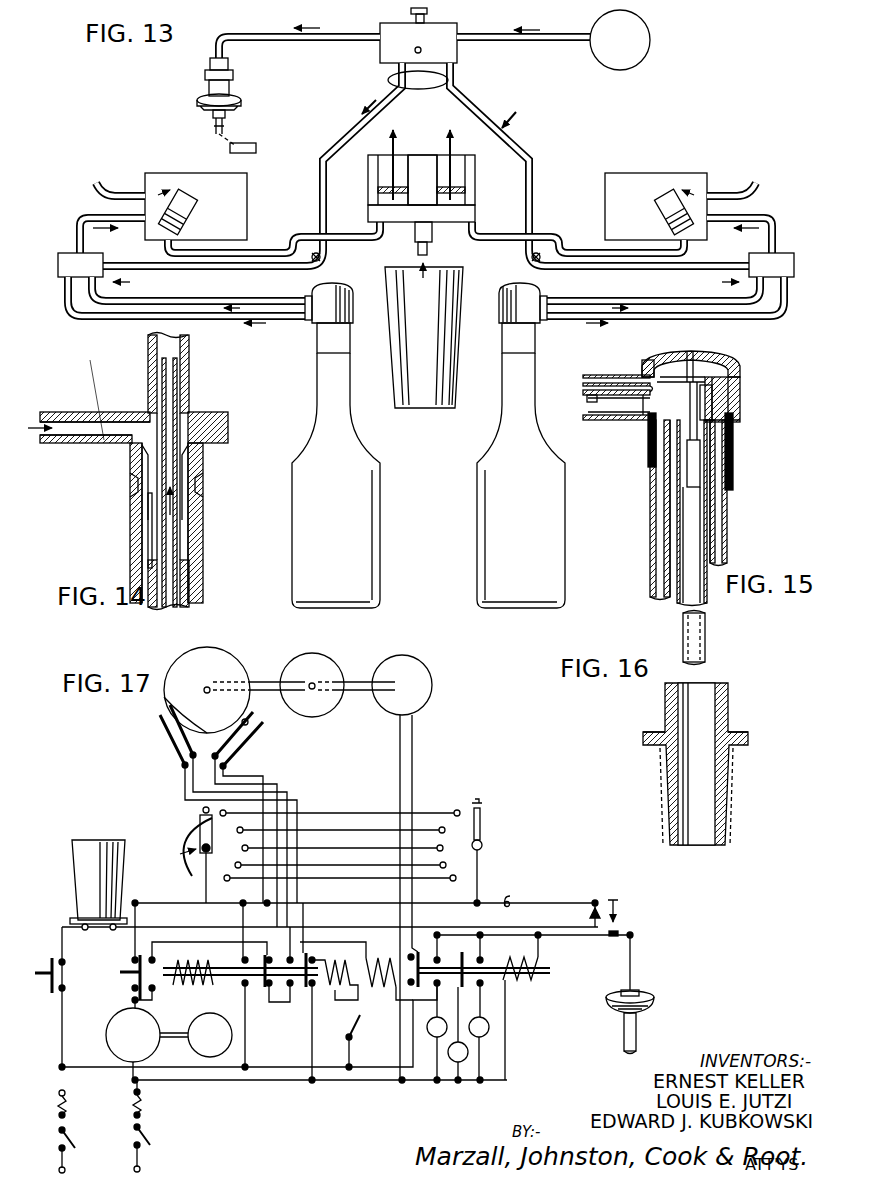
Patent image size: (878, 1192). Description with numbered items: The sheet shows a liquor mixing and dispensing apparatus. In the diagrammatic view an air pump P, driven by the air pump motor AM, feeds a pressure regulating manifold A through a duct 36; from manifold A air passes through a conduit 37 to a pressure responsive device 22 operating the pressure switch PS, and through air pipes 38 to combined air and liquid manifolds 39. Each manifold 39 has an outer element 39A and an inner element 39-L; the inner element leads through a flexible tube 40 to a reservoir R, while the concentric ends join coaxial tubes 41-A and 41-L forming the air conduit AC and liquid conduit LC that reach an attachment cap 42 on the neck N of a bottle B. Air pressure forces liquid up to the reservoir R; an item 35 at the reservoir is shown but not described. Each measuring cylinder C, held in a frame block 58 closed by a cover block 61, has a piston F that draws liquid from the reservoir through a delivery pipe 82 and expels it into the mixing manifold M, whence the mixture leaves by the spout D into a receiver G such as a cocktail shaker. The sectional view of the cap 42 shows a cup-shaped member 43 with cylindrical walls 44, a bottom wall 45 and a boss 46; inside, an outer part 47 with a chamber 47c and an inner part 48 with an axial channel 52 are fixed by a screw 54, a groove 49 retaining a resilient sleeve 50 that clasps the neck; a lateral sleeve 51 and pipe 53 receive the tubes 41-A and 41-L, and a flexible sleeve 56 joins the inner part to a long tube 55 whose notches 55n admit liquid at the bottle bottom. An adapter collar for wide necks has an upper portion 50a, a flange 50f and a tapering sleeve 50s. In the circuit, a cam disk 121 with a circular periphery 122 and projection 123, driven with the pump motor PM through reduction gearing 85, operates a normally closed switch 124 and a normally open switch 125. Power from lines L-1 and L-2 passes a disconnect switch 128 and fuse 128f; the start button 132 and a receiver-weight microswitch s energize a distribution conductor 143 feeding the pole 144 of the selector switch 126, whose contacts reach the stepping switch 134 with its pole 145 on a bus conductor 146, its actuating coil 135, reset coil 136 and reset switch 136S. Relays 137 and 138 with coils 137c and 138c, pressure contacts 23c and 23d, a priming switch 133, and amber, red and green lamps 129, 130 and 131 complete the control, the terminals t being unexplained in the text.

In FIG. 13, the pressure regulating manifold A is at (438, 31).
In FIG. 17, the pressure regulating manifold A is at (437, 1031).
In FIG. 13, the air pump P is at (620, 40).
In FIG. 17, the air pump P is at (210, 1035).
In FIG. 17, the measuring pump driving motor PM is at (402, 867).
In FIG. 13, the pressure responsive device 22 is at (230, 84).
In FIG. 17, the pressure responsive device 22 is at (615, 1005).
In FIG. 17, the normally closed switch 23c is at (596, 902).
In FIG. 17, the normally open switch 23d is at (614, 937).
In FIG. 13, the vent tube 35 is at (103, 187).
In FIG. 13, the pipe or duct 36 is at (563, 42).
In FIG. 13, the conduit 37 is at (327, 42).
In FIG. 13, the air pipes 38 is at (448, 77).
In FIG. 14, the air pipes 38 is at (44, 447).
In FIG. 13, the combined air and liquid manifold 39 is at (426, 265).
In FIG. 14, the combined air and liquid manifold 39 is at (214, 452).
In FIG. 14, the outer tubular element 39A is at (128, 455).
In FIG. 14, the inner tubular element 39-L is at (152, 498).
In FIG. 13, the flexible tube 40 is at (76, 235).
In FIG. 14, the flexible tube 40 is at (158, 354).
In FIG. 13, the outer air tube 41-A is at (192, 300).
In FIG. 14, the outer air tube 41-A is at (205, 549).
In FIG. 15, the outer air tube 41-A is at (608, 377).
In FIG. 13, the inner liquid tube 41-L is at (220, 306).
In FIG. 14, the inner liquid tube 41-L is at (178, 571).
In FIG. 15, the inner liquid tube 41-L is at (587, 398).
In FIG. 13, the attachment cap 42 is at (356, 300).
In FIG. 15, the attachment cap 42 is at (740, 447).
In FIG. 15, the cup-shaped member 43 is at (742, 360).
In FIG. 15, the cylindrical side walls 44 is at (735, 425).
In FIG. 15, the bottom wall 45 is at (660, 362).
In FIG. 15, the central boss 46 is at (705, 368).
In FIG. 15, the outer ducted part 47 is at (735, 378).
In FIG. 15, the central chamber 47c is at (742, 405).
In FIG. 15, the inner ducted part 48 is at (717, 378).
In FIG. 15, the groove 49 is at (670, 440).
In FIG. 15, the resilient sleeve 50 is at (731, 484).
In FIG. 16, the upper cylindrical portion 50a is at (666, 697).
In FIG. 16, the peripheral flange 50f is at (644, 735).
In FIG. 16, the tapering sleeve portion 50s is at (668, 800).
In FIG. 15, the sleeve 51 is at (633, 420).
In FIG. 15, the axial channel 52 is at (673, 458).
In FIG. 15, the pipe 53 is at (609, 420).
In FIG. 15, the fastening screw 54 is at (690, 360).
In FIG. 15, the elongated tube 55 is at (690, 560).
In FIG. 16, the notches 55n is at (697, 660).
In FIG. 15, the connection sleeve 56 is at (680, 545).
In FIG. 13, the frame block 58 is at (423, 165).
In FIG. 13, the cover block 61 is at (472, 212).
In FIG. 13, the delivery pipe 82 is at (286, 238).
In FIG. 17, the reduction gearing 85 is at (322, 685).
In FIG. 17, the cam disk 121 is at (207, 690).
In FIG. 17, the circular periphery 122 is at (165, 699).
In FIG. 17, the cam actuating projection 123 is at (246, 719).
In FIG. 17, the normally closed switch 124 is at (240, 760).
In FIG. 17, the normally open switch 125 is at (167, 758).
In FIG. 17, the selector switch 126 is at (184, 861).
In FIG. 17, the disconnect switch 128 is at (160, 1142).
In FIG. 17, the fuse means 128f is at (150, 1100).
In FIG. 17, the amber signal lamp 129 is at (427, 1027).
In FIG. 17, the red signal lamp 130 is at (468, 1052).
In FIG. 17, the green signal lamp 131 is at (489, 1027).
In FIG. 17, the start button switch 132 is at (41, 977).
In FIG. 17, the overriding switch 133 is at (122, 985).
In FIG. 17, the stepping switch 134 is at (486, 850).
In FIG. 17, the actuating coil 135 is at (375, 958).
In FIG. 17, the resetting coil 136 is at (342, 992).
In FIG. 17, the resetting switch 136S is at (374, 1052).
In FIG. 17, the relay switch 137 is at (295, 1003).
In FIG. 17, the relay actuating coil 137c is at (188, 984).
In FIG. 17, the relay switch 138 is at (416, 970).
In FIG. 17, the relay actuating coil 138c is at (509, 979).
In FIG. 17, the distribution conductor 143 is at (167, 926).
In FIG. 17, the movable pole 144 is at (200, 831).
In FIG. 17, the movable pole 145 is at (483, 822).
In FIG. 17, the bus conductor 146 is at (507, 900).
In FIG. 13, the pneumatic conduit means AC is at (291, 48).
In FIG. 14, the pneumatic conduit means AC is at (99, 323).
In FIG. 13, the liquid delivery conduit means LC is at (78, 216).
In FIG. 14, the liquid delivery conduit means LC is at (193, 381).
In FIG. 13, the reservoir R is at (241, 191).
In FIG. 13, the measuring cylinder C is at (378, 171).
In FIG. 13, the piston F is at (376, 190).
In FIG. 13, the dispensing spout D is at (416, 249).
In FIG. 13, the mixing chamber M is at (430, 236).
In FIG. 13, the fluid receiver G is at (423, 410).
In FIG. 17, the fluid receiver G is at (100, 853).
In FIG. 13, the bottle neck N is at (351, 383).
In FIG. 15, the bottle neck N is at (727, 543).
In FIG. 13, the bottle B is at (373, 530).
In FIG. 13, the pressure switch PS is at (252, 143).
In FIG. 17, the pressure switch PS is at (641, 913).
In FIG. 17, the microswitch s is at (93, 931).
In FIG. 17, the power supply line L-1 is at (249, 1025).
In FIG. 17, the power supply line L-2 is at (301, 1087).
In FIG. 17, the air pump driving motor AM is at (147, 1044).
In FIG. 17, the terminals t is at (340, 845).